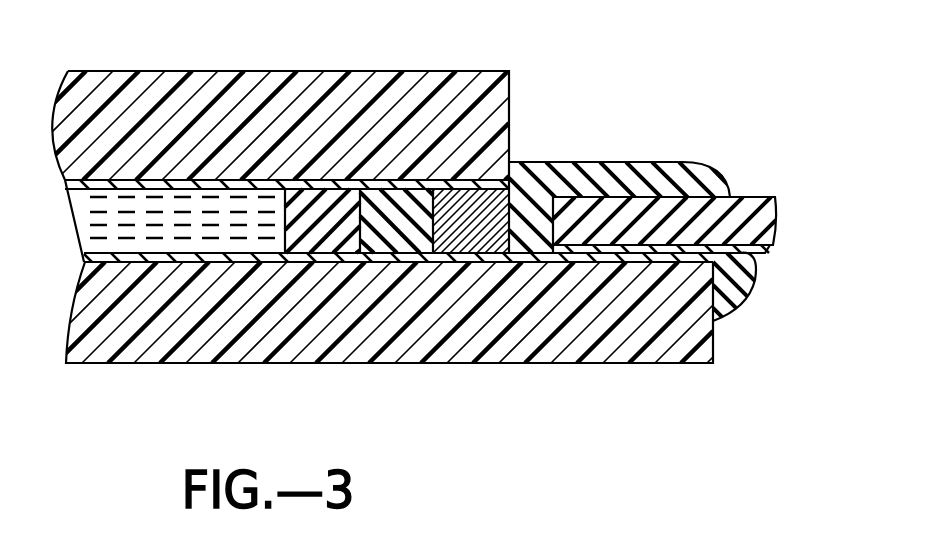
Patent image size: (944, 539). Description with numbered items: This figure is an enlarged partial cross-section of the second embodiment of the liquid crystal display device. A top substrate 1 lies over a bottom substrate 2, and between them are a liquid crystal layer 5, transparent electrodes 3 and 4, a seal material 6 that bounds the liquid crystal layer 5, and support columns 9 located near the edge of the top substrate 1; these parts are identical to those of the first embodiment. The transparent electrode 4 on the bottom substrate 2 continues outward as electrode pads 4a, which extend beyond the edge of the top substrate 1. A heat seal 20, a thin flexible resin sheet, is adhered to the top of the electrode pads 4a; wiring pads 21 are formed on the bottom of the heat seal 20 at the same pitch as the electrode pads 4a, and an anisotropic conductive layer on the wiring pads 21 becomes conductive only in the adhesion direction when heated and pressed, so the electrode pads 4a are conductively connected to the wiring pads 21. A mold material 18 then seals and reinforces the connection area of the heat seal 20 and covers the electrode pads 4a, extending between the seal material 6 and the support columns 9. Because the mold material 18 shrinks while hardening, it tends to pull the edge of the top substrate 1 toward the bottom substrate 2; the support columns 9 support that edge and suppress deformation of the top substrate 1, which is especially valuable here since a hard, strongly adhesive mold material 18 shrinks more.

The top substrate 1 is at (316, 71).
The bottom substrate 2 is at (192, 364).
The transparent electrode 3 is at (181, 180).
The transparent electrode 4 is at (145, 266).
The electrode pads 4a is at (670, 252).
The liquid crystal layer 5 is at (240, 233).
The seal material 6 is at (322, 250).
The support columns 9 is at (480, 190).
The mold material 18 is at (586, 162).
The heat seal 20 is at (755, 197).
The wiring pads 21 is at (606, 262).